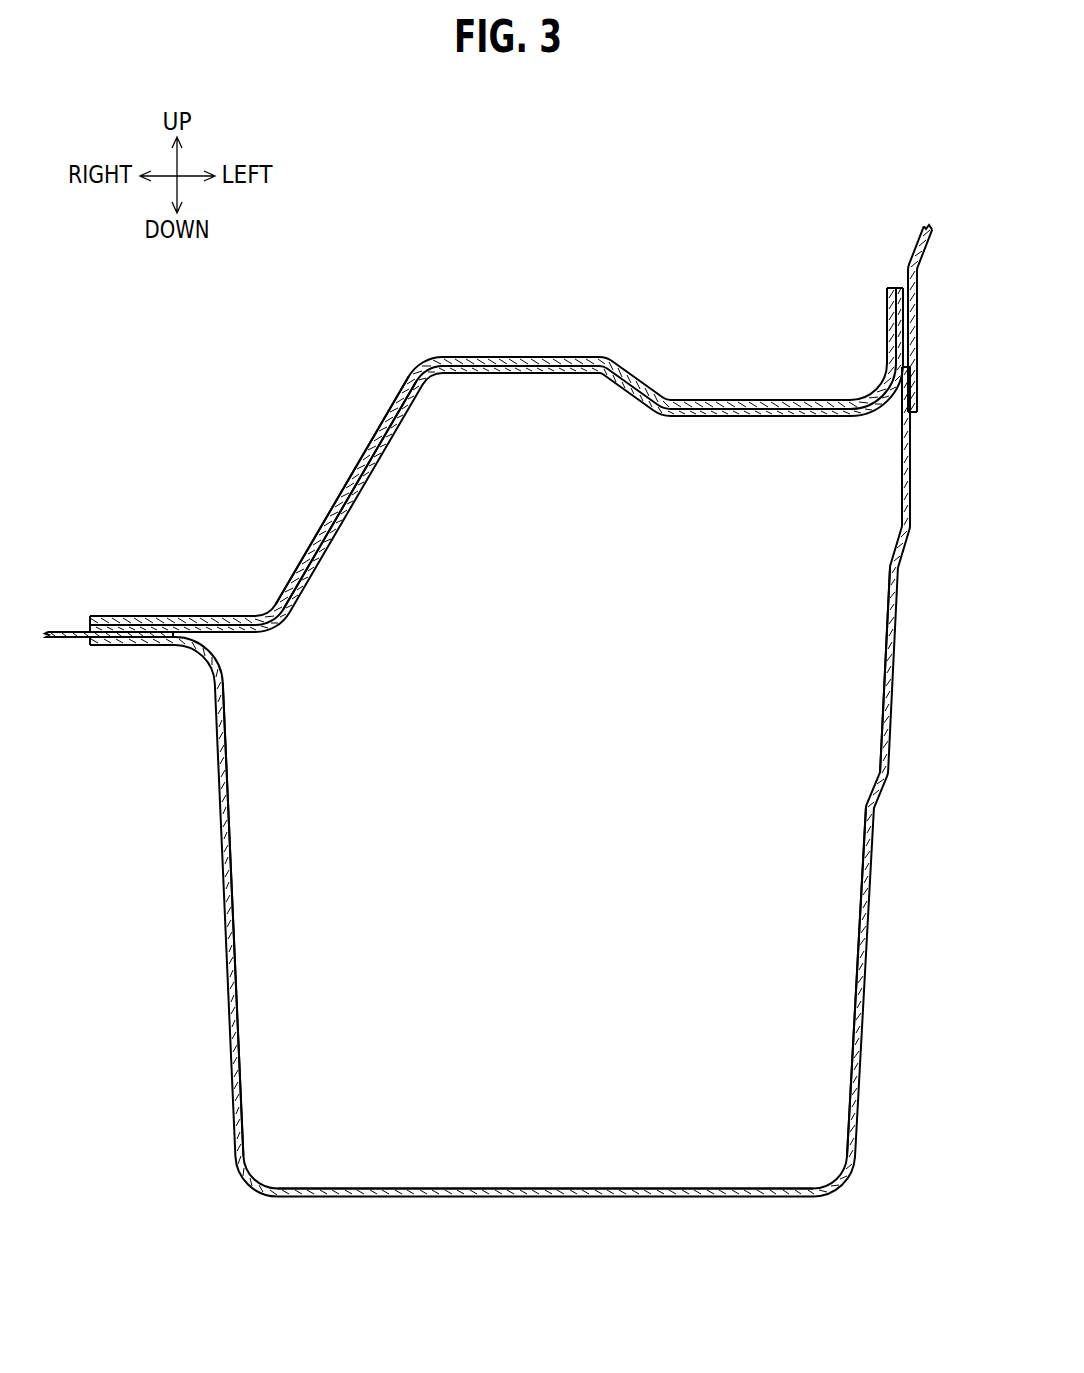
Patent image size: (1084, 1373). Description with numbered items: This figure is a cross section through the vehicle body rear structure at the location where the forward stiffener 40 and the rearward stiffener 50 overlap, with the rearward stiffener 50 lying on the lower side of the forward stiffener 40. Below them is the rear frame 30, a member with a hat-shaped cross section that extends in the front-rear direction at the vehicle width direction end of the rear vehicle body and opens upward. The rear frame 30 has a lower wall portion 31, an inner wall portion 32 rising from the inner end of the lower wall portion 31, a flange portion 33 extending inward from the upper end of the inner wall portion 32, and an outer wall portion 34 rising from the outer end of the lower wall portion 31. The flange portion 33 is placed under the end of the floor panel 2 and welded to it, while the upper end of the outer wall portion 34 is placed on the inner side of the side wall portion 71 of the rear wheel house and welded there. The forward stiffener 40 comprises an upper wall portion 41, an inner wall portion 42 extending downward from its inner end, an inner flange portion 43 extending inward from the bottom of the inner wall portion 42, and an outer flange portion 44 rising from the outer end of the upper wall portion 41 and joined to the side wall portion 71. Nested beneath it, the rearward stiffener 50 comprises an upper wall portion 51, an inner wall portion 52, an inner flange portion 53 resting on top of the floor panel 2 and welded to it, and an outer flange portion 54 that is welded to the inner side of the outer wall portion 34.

The floor panel 2 is at (70, 628).
The rear frame 30 is at (624, 1230).
The lower wall portion 31 is at (540, 1198).
The inner wall portion 32 is at (222, 905).
The flange portion 33 is at (133, 645).
The outer wall portion 34 is at (877, 885).
The forward stiffener 40 is at (570, 336).
The upper wall portion 41 is at (513, 357).
The inner wall portion 42 is at (347, 481).
The inner flange portion 43 is at (137, 616).
The outer flange portion 44 is at (887, 337).
The rearward stiffener 50 is at (658, 440).
The upper wall portion 51 is at (513, 377).
The inner wall portion 52 is at (363, 490).
The inner flange portion 53 is at (250, 632).
The outer flange portion 54 is at (900, 288).
The side wall portion 71 is at (918, 343).